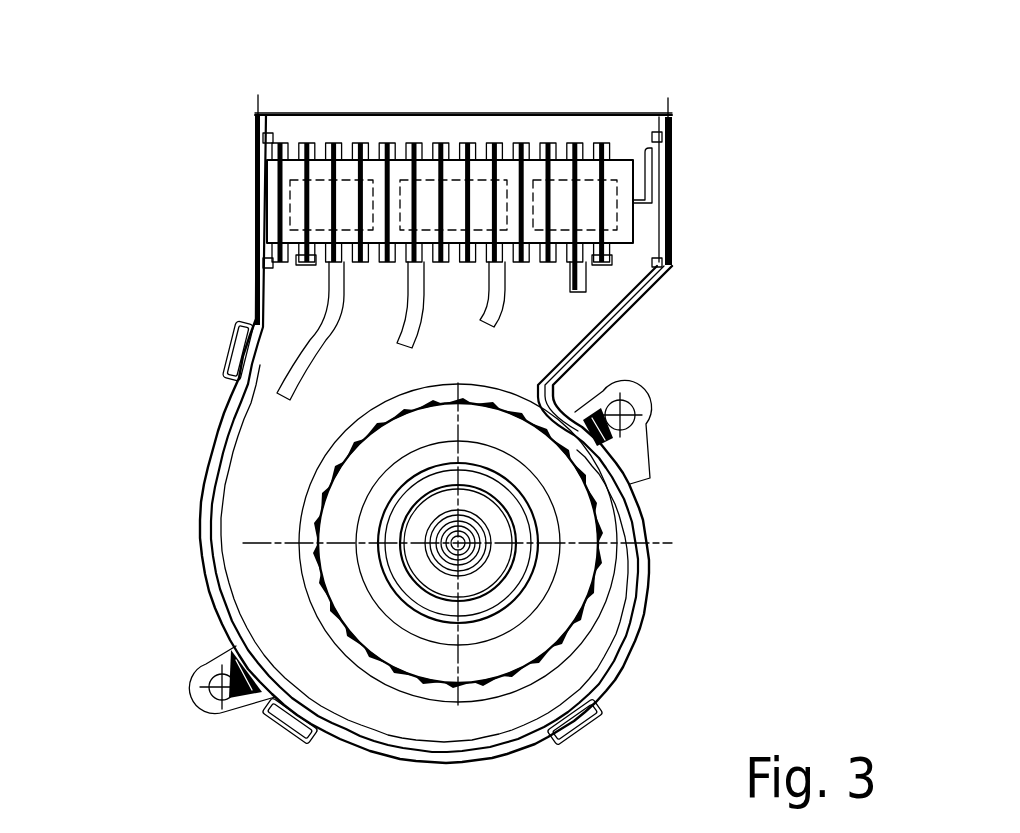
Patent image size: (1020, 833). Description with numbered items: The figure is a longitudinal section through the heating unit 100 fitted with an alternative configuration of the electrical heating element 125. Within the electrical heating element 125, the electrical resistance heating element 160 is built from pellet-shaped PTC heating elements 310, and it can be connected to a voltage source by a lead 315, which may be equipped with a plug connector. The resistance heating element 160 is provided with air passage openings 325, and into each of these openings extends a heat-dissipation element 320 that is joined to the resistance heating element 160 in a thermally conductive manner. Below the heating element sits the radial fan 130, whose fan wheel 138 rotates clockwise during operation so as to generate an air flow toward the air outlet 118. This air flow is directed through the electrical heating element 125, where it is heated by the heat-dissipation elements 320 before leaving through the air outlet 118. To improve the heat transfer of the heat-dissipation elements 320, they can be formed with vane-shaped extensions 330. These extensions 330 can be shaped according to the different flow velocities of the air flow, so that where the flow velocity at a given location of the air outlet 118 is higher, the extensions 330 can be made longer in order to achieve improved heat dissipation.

The heating unit 100 is at (545, 97).
The air outlet 118 is at (540, 302).
The electrical heating element 125 is at (346, 128).
The radial fan 130 is at (310, 568).
The fan wheel 138 is at (573, 583).
The electrical resistance heating element 160 is at (298, 265).
The pellet-shaped PTC heating elements 310 is at (290, 180).
The lead 315 is at (647, 150).
The heat-dissipation element 320 is at (605, 263).
The air passage openings 325 is at (488, 160).
The vane-shaped extensions 330 is at (217, 436).